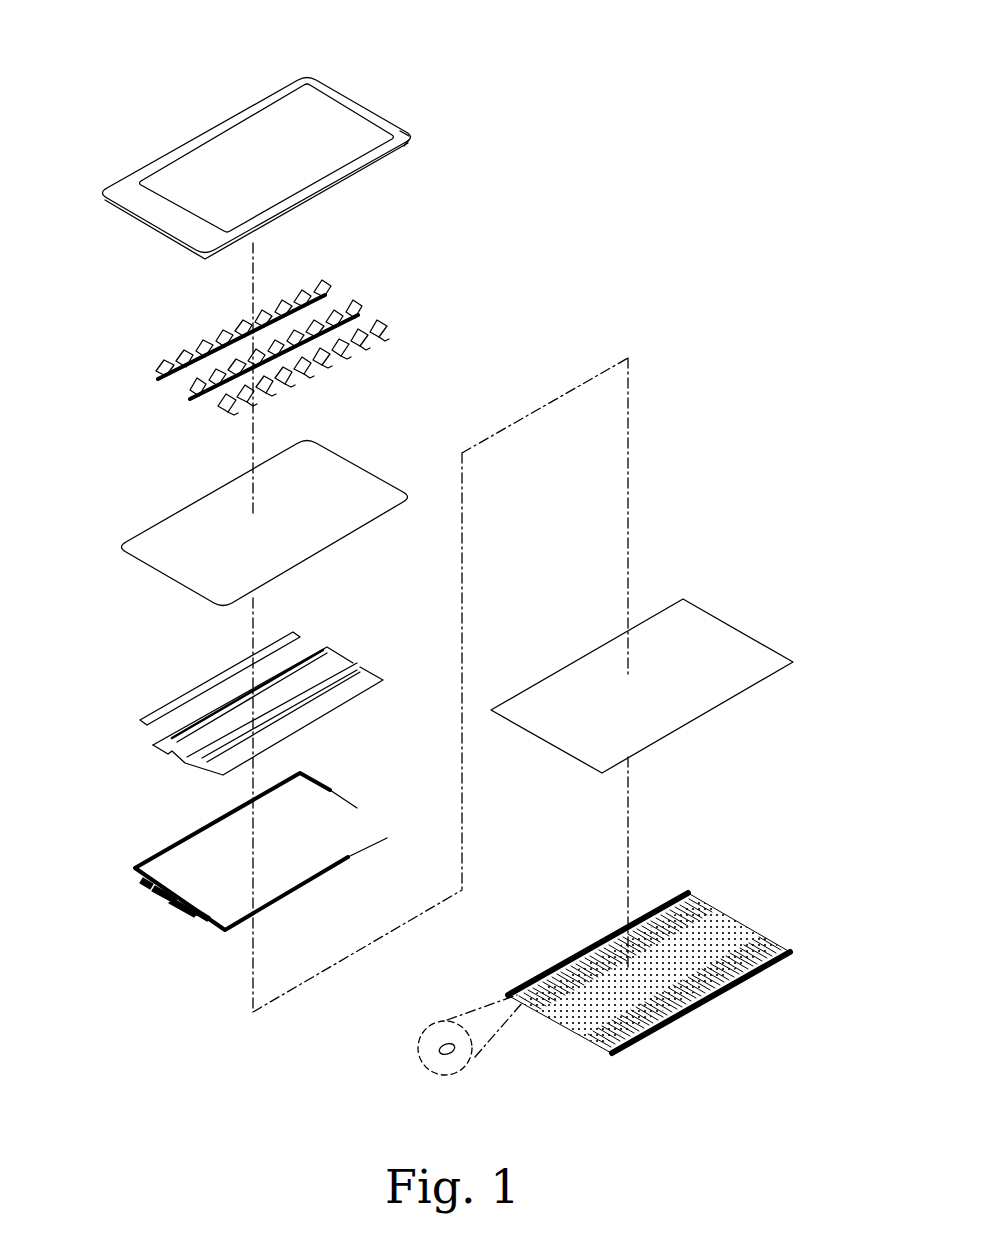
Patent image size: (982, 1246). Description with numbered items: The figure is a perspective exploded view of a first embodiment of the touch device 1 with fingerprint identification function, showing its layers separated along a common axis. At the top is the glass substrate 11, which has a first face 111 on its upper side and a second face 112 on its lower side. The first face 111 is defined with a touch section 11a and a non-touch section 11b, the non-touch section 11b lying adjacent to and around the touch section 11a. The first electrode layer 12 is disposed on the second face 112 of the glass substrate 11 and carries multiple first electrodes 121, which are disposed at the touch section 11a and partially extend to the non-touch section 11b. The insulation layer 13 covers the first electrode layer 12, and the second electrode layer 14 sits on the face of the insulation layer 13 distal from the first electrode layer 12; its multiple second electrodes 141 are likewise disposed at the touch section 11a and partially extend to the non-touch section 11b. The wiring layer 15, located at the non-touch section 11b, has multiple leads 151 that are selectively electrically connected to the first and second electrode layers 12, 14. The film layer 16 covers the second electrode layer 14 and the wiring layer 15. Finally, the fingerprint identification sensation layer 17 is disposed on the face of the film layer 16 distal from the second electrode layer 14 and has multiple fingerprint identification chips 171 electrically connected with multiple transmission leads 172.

The touch device 1 is at (707, 78).
The glass substrate 11 is at (307, 155).
The touch section 11a is at (357, 147).
The non-touch section 11b is at (350, 102).
The first face 111 is at (409, 135).
The second face 112 is at (436, 149).
The first electrode layer 12 is at (334, 326).
The first electrodes 121 is at (370, 305).
The insulation layer 13 is at (338, 462).
The second electrode layer 14 is at (236, 678).
The second electrodes 141 is at (158, 709).
The wiring layer 15 is at (229, 826).
The leads 151 is at (133, 868).
The film layer 16 is at (678, 642).
The fingerprint identification sensation layer 17 is at (579, 984).
The fingerprint identification chips 171 is at (438, 1050).
The transmission leads 172 is at (517, 992).